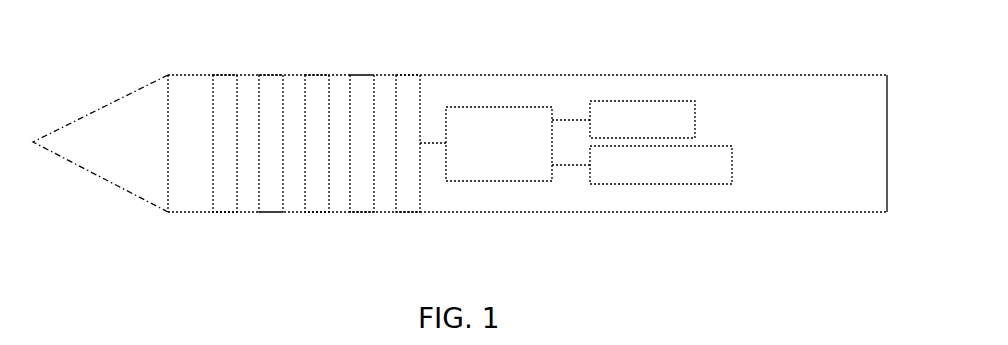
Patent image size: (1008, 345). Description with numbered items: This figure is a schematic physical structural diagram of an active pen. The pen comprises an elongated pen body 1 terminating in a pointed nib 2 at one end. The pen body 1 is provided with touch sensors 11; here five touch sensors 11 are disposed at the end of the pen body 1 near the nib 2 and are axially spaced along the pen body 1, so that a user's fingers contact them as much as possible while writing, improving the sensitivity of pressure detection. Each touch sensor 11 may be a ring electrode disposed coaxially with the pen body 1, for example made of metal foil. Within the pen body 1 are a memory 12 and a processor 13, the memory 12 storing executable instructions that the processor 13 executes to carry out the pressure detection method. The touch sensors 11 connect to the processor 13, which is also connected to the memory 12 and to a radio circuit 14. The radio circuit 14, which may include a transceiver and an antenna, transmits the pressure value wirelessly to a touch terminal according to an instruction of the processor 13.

The pen body 1 is at (517, 73).
The nib 2 is at (105, 106).
The touch sensor 11 is at (410, 75).
The memory 12 is at (628, 99).
The processor 13 is at (513, 182).
The radio circuit 14 is at (628, 185).